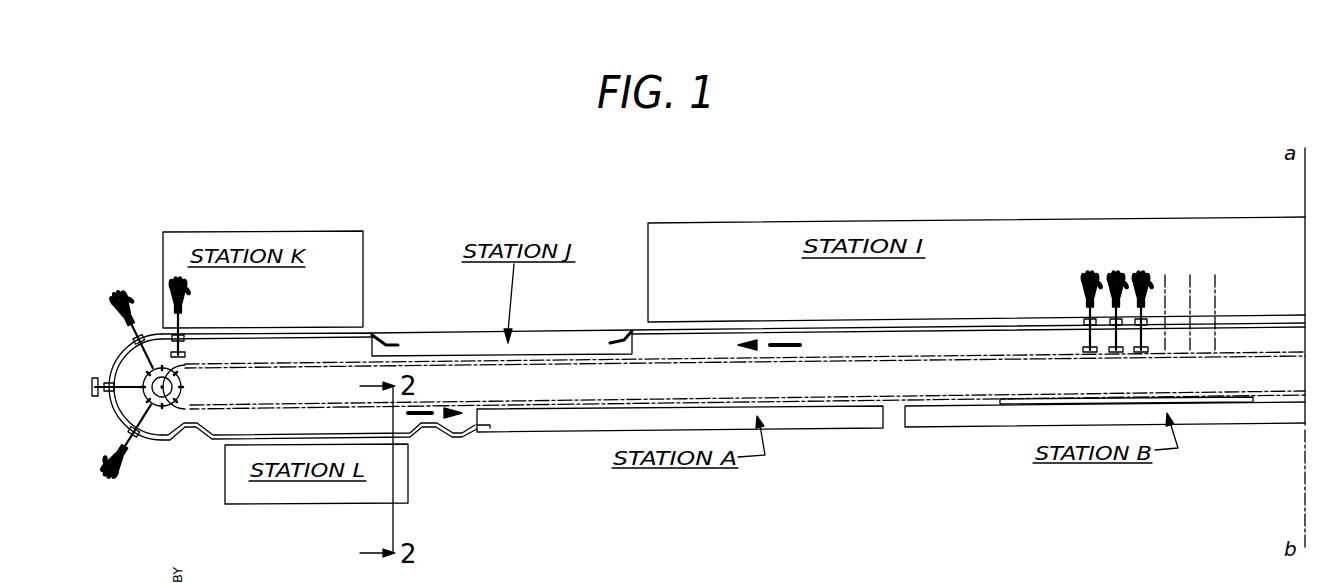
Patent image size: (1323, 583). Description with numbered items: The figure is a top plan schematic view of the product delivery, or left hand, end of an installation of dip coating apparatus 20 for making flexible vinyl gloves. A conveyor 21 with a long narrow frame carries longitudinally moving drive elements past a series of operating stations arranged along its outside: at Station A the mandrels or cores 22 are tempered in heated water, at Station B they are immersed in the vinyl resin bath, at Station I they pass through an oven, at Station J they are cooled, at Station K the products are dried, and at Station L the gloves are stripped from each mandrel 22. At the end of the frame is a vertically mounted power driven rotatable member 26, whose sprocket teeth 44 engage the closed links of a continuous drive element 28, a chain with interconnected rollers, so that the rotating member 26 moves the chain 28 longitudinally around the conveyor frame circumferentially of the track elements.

The installation of dip coating apparatus 20 is at (334, 214).
The conveyor 21 is at (888, 378).
The mandrels or cores 22 is at (1143, 277).
The power driven rotatable member 26 is at (181, 386).
The continuous drive element 28 is at (262, 404).
The sprocket teeth 44 is at (180, 405).